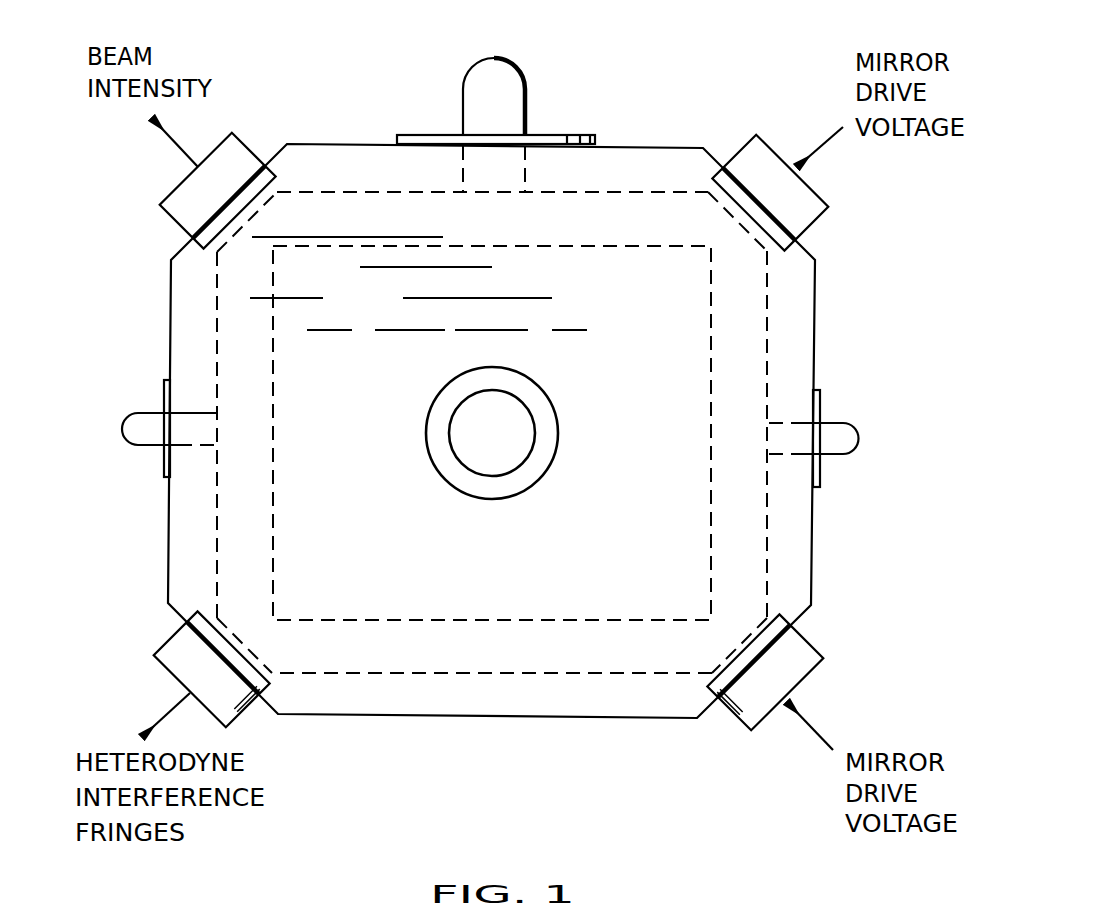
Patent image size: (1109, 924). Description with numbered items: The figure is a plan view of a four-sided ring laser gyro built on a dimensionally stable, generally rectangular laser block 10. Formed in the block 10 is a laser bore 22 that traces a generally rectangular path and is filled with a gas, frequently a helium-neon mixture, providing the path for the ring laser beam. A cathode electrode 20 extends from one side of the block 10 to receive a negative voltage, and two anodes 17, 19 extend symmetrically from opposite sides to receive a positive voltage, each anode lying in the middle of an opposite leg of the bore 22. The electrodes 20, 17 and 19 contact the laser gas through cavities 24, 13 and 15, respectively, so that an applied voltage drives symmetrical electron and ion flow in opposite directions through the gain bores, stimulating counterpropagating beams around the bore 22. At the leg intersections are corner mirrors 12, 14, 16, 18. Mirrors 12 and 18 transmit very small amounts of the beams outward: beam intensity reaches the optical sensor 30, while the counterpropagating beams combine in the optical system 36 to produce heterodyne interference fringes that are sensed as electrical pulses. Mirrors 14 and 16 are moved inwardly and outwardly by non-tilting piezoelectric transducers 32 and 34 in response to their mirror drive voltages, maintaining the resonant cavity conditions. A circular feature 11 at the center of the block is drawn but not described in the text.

The laser block 10 is at (655, 175).
The photodetector 11 is at (503, 417).
The corner mirror 12 is at (245, 200).
The cavity 13 is at (188, 412).
The corner mirror 14 is at (747, 213).
The cavity 15 is at (795, 420).
The corner mirror 16 is at (715, 670).
The anode 17 is at (143, 425).
The corner mirror 18 is at (260, 670).
The anode 19 is at (833, 430).
The cathode electrode 20 is at (483, 90).
The laser bore 22 is at (535, 213).
The cavity 24 is at (450, 163).
The optical sensor 30 is at (242, 152).
The transducer 32 is at (757, 165).
The transducer 34 is at (793, 658).
The optical system 36 is at (180, 650).